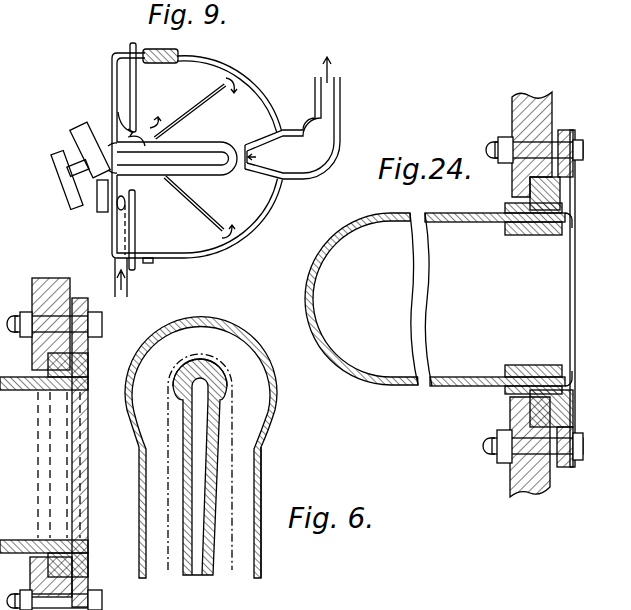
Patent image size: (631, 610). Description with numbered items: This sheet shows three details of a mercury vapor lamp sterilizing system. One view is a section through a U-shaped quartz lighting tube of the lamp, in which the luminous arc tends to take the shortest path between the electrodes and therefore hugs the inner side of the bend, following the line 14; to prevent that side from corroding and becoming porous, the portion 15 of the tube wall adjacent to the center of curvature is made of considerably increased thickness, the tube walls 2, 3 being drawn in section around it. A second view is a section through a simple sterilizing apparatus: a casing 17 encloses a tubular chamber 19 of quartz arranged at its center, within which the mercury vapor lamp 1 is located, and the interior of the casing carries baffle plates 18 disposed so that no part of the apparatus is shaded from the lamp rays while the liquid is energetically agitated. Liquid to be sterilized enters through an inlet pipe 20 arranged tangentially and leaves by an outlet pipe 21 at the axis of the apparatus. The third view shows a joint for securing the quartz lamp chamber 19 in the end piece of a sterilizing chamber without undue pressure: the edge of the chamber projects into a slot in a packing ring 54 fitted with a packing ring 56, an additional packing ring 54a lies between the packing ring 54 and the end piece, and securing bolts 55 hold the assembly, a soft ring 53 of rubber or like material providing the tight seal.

In FIG. 9, the mercury vapor lamp 1 is at (112, 150).
In FIG. 9, the casing 17 is at (264, 94).
In FIG. 9, the baffle plates 18 is at (200, 105).
In FIG. 9, the inlet pipe 20 is at (114, 271).
In FIG. 9, the outlet pipe 21 is at (304, 160).
In FIG. 24, the tubular quartz lamp chamber 19 is at (464, 386).
In FIG. 24, the soft ring 53 is at (84, 374).
In FIG. 24, the packing ring 54 is at (557, 238).
In FIG. 24, the additional packing ring 54a is at (512, 196).
In FIG. 24, the securing bolts 55 is at (581, 142).
In FIG. 24, the packing ring 56 is at (533, 237).
In FIG. 6, the outer shell 2 is at (138, 506).
In FIG. 6, the shell wall 3 is at (262, 497).
In FIG. 6, the line of the luminous arc 14 is at (166, 430).
In FIG. 6, the thickened portion of the lighting tube 15 is at (177, 363).